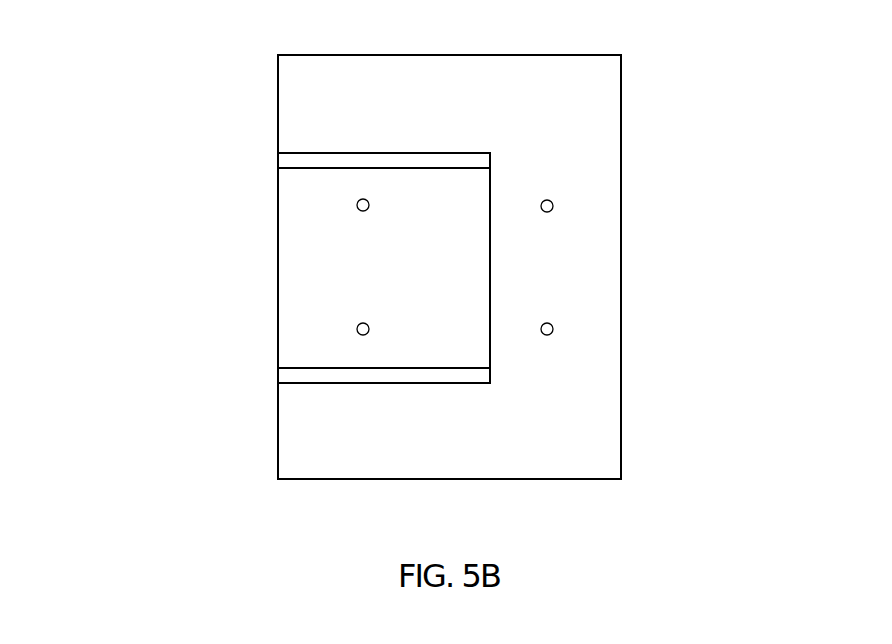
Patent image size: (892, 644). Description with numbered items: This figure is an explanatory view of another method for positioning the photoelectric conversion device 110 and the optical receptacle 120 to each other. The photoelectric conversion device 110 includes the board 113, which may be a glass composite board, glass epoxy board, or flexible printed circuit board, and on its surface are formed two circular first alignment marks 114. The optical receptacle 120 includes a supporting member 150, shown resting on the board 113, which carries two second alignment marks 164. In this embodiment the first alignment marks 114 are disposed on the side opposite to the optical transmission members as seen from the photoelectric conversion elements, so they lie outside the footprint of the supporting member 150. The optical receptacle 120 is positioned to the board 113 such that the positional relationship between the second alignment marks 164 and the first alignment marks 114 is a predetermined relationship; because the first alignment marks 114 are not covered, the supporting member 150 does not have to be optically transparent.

The photoelectric conversion device 110 is at (565, 267).
The board 113 is at (600, 453).
The first alignment marks 114 is at (553, 206).
The optical receptacle 120 is at (268, 287).
The supporting member 150 is at (337, 347).
The second alignment marks 164 is at (357, 205).